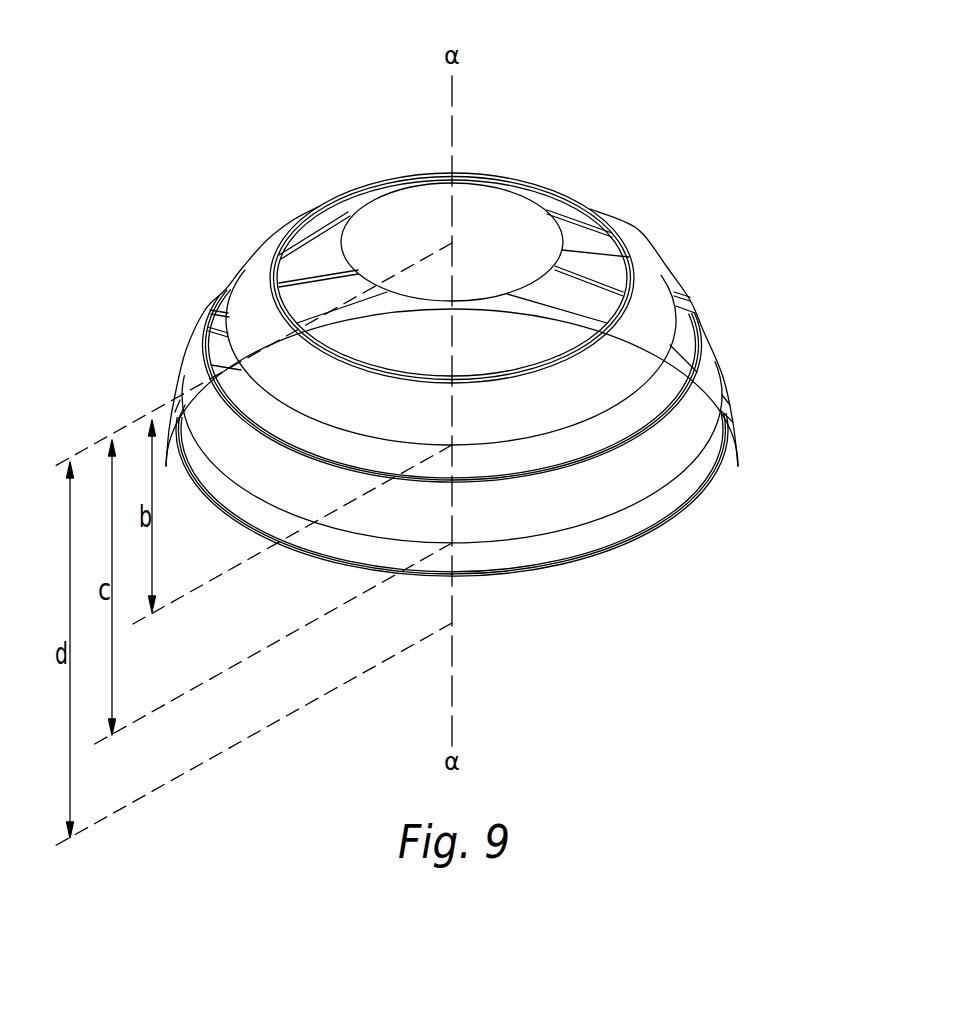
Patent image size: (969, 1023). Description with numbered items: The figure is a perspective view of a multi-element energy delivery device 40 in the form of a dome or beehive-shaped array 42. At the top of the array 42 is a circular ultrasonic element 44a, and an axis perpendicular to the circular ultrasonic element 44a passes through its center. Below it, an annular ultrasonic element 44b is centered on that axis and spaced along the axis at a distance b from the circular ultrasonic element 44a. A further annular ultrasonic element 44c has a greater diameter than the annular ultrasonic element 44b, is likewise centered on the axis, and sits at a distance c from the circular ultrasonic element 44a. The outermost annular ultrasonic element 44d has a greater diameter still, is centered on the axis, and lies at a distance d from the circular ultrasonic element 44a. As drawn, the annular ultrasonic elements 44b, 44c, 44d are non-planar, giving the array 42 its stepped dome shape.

The dome assembly 40 is at (233, 97).
The dome or beehive-shaped array 42 is at (780, 400).
The circular ultrasonic element 44a is at (503, 218).
The annular ultrasonic element 44b is at (645, 327).
The annular ultrasonic element 44c is at (693, 420).
The annular ultrasonic element 44d is at (734, 452).